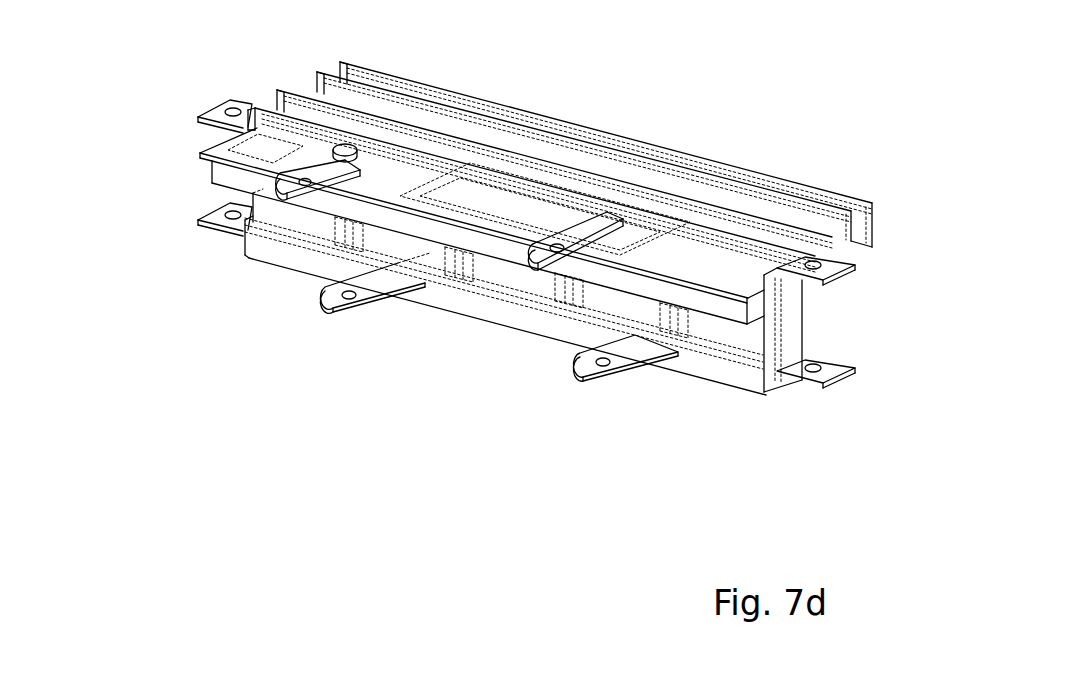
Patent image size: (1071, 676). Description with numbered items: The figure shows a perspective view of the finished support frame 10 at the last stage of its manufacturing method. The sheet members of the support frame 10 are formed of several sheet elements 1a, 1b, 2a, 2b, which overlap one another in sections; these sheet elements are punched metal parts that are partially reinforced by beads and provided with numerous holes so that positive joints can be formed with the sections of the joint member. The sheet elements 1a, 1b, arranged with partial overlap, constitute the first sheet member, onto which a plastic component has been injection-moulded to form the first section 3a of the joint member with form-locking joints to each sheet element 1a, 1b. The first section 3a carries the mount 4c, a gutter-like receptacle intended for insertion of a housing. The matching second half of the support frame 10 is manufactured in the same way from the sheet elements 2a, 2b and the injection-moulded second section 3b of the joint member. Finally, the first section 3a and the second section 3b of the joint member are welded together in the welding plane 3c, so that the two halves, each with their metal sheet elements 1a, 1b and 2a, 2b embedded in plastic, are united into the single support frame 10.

The support frame 10 is at (856, 162).
The sheet element 1a is at (195, 116).
The sheet element 1b is at (848, 279).
The sheet element 2a is at (195, 220).
The sheet element 2b is at (850, 381).
The first section of the joint member 3a is at (600, 279).
The second section of the joint member 3b is at (283, 258).
The welding plane 3c is at (800, 317).
The mount 4c is at (683, 156).